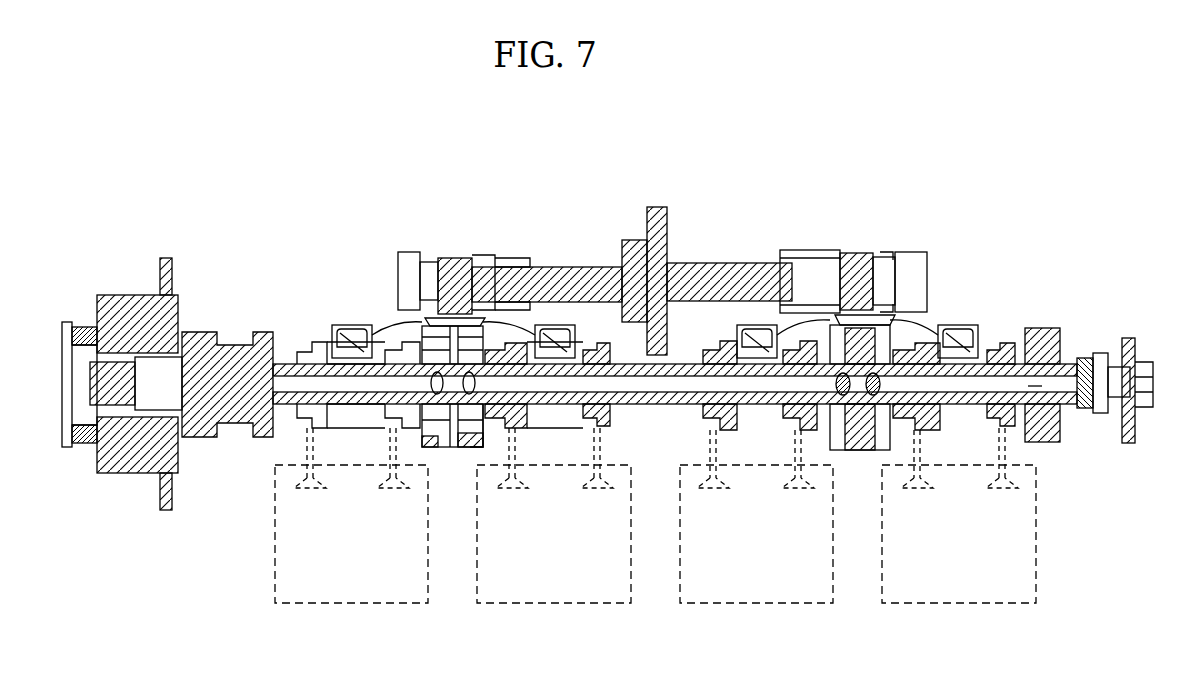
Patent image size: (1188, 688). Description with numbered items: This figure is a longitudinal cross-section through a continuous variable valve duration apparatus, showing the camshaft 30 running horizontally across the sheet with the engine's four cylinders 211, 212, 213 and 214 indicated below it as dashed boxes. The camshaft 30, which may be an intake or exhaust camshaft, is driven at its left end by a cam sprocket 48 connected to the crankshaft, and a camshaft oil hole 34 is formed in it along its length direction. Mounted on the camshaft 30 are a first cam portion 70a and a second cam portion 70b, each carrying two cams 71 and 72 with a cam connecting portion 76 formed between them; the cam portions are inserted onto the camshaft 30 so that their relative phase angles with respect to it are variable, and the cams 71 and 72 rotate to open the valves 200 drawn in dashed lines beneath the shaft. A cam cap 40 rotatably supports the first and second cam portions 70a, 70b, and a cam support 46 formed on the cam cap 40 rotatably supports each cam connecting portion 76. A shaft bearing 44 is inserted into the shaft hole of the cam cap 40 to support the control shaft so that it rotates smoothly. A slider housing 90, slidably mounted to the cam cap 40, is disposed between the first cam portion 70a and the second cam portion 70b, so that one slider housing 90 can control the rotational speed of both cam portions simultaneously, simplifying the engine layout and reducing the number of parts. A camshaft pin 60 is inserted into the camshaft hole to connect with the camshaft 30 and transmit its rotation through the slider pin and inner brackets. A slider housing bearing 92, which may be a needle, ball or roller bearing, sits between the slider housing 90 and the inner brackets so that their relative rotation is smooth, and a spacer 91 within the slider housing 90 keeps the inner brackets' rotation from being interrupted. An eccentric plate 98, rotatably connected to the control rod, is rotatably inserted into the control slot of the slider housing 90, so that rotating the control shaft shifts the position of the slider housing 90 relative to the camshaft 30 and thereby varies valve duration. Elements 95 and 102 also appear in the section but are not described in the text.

The camshaft 30 is at (1058, 372).
The camshaft oil hole 34 is at (1035, 383).
The cam cap 40 is at (490, 255).
The shaft bearing 44 is at (505, 258).
The cam support 46 is at (350, 333).
The cam sprocket 48 is at (165, 512).
The camshaft pin 60 is at (469, 372).
The first cam portion 70a is at (345, 425).
The second cam portion 70b is at (560, 425).
The cam 71 is at (322, 440).
The cam 72 is at (395, 440).
The cam connecting portion 76 is at (375, 445).
The slider housing 90 is at (452, 262).
The spacer 91 is at (478, 430).
The slider housing bearing 92 is at (905, 333).
The control shaft 95 is at (712, 262).
The eccentric plate 98 is at (443, 307).
The flange 102 is at (655, 207).
The valve 200 is at (298, 484).
The cylinder 211 is at (352, 603).
The cylinder 212 is at (554, 603).
The cylinder 213 is at (756, 603).
The cylinder 214 is at (958, 603).